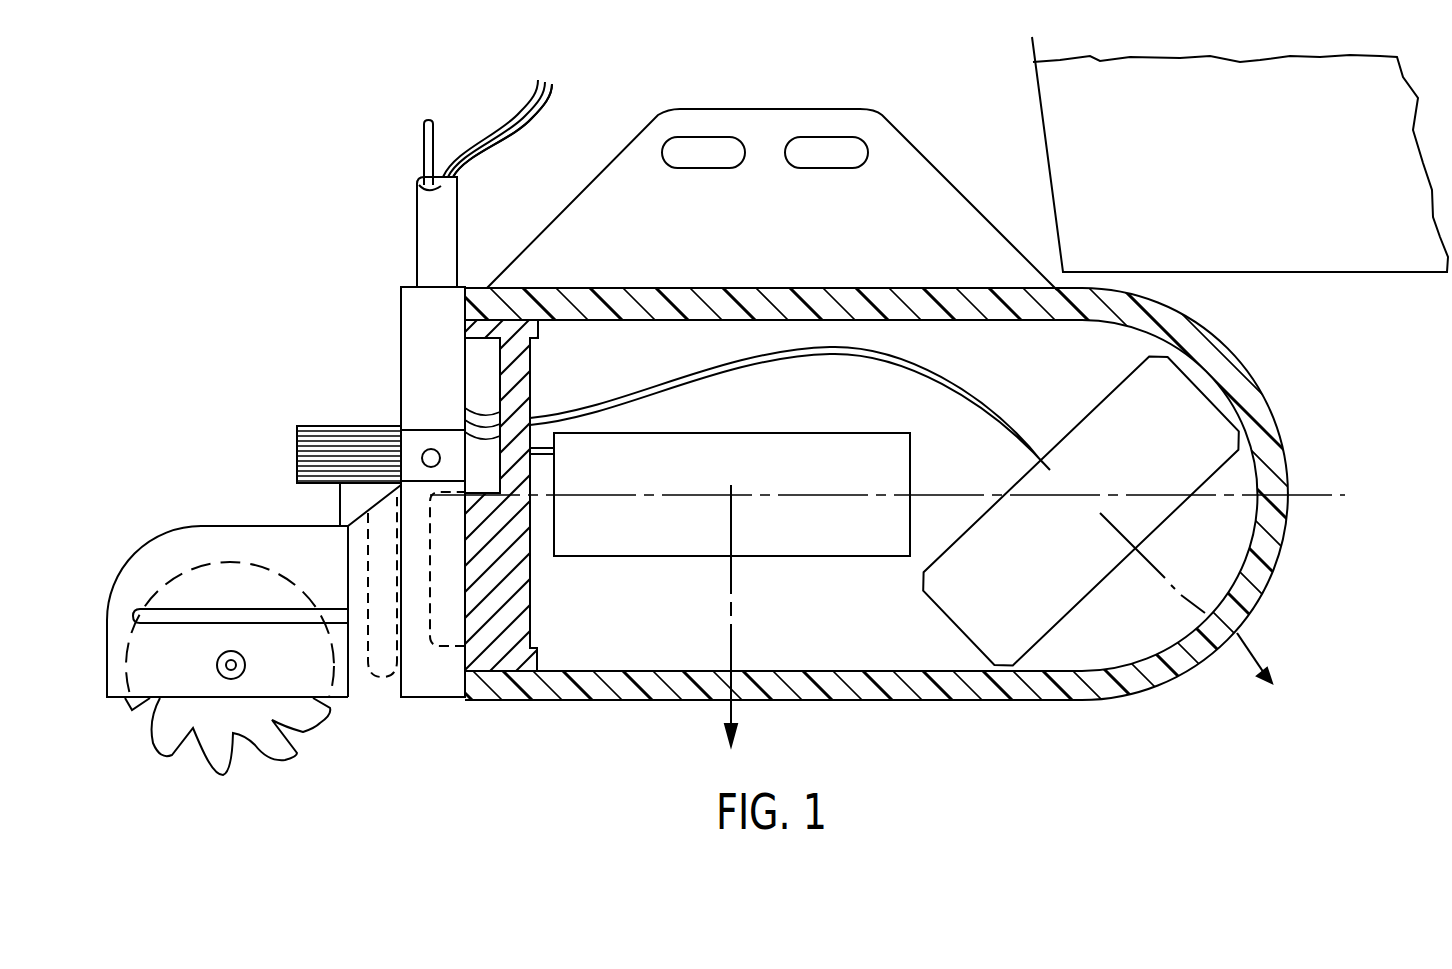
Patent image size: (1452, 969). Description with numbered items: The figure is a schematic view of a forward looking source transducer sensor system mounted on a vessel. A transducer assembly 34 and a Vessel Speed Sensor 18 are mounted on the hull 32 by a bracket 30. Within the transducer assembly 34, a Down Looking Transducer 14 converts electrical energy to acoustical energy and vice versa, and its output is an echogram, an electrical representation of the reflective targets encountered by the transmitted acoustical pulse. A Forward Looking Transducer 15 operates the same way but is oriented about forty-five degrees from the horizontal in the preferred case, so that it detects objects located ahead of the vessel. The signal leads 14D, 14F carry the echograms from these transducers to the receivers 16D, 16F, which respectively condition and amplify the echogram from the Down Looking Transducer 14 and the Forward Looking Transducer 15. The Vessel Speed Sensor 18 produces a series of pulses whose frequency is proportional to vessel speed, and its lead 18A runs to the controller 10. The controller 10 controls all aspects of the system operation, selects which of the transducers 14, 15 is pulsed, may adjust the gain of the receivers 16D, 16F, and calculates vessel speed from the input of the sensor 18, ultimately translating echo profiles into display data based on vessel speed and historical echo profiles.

The controller 10 is at (428, 110).
The Down Looking Transducer 14 is at (778, 433).
The signal lead to receiver 14D is at (580, 78).
The signal lead to receiver 14F is at (496, 129).
The Forward Looking Transducer 15 is at (1092, 590).
The receiver 16D is at (502, 130).
The receiver 16F is at (502, 130).
The Vessel Speed Sensor 18 is at (200, 555).
The wire/conduit to controller 18A is at (424, 143).
The bracket 30 is at (887, 137).
The hull 32 is at (1258, 187).
The transducer assembly 34 is at (1283, 571).